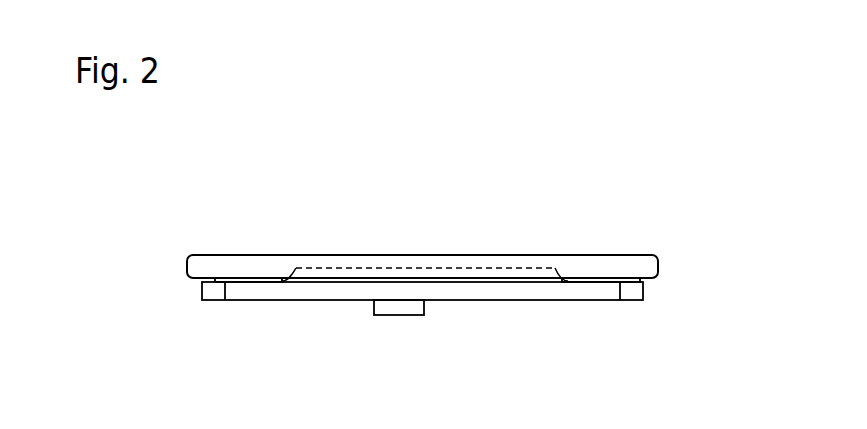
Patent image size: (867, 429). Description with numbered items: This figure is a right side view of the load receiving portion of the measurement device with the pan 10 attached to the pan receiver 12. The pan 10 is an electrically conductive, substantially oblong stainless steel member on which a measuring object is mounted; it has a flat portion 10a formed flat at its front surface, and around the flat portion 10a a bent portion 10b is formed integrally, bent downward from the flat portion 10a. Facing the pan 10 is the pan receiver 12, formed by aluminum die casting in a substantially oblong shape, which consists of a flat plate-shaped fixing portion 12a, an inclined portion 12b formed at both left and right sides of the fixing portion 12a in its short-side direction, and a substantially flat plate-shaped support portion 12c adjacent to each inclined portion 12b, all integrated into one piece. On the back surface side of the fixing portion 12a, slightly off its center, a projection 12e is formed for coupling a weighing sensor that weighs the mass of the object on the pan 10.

The pan 10 is at (210, 255).
The flat portion 10a is at (390, 255).
The bent portion 10b is at (186, 265).
The pan receiver 12 is at (515, 300).
The fixing portion 12a is at (485, 266).
The inclined portion 12b is at (292, 266).
The support portion 12c is at (247, 278).
The projection 12e is at (397, 317).